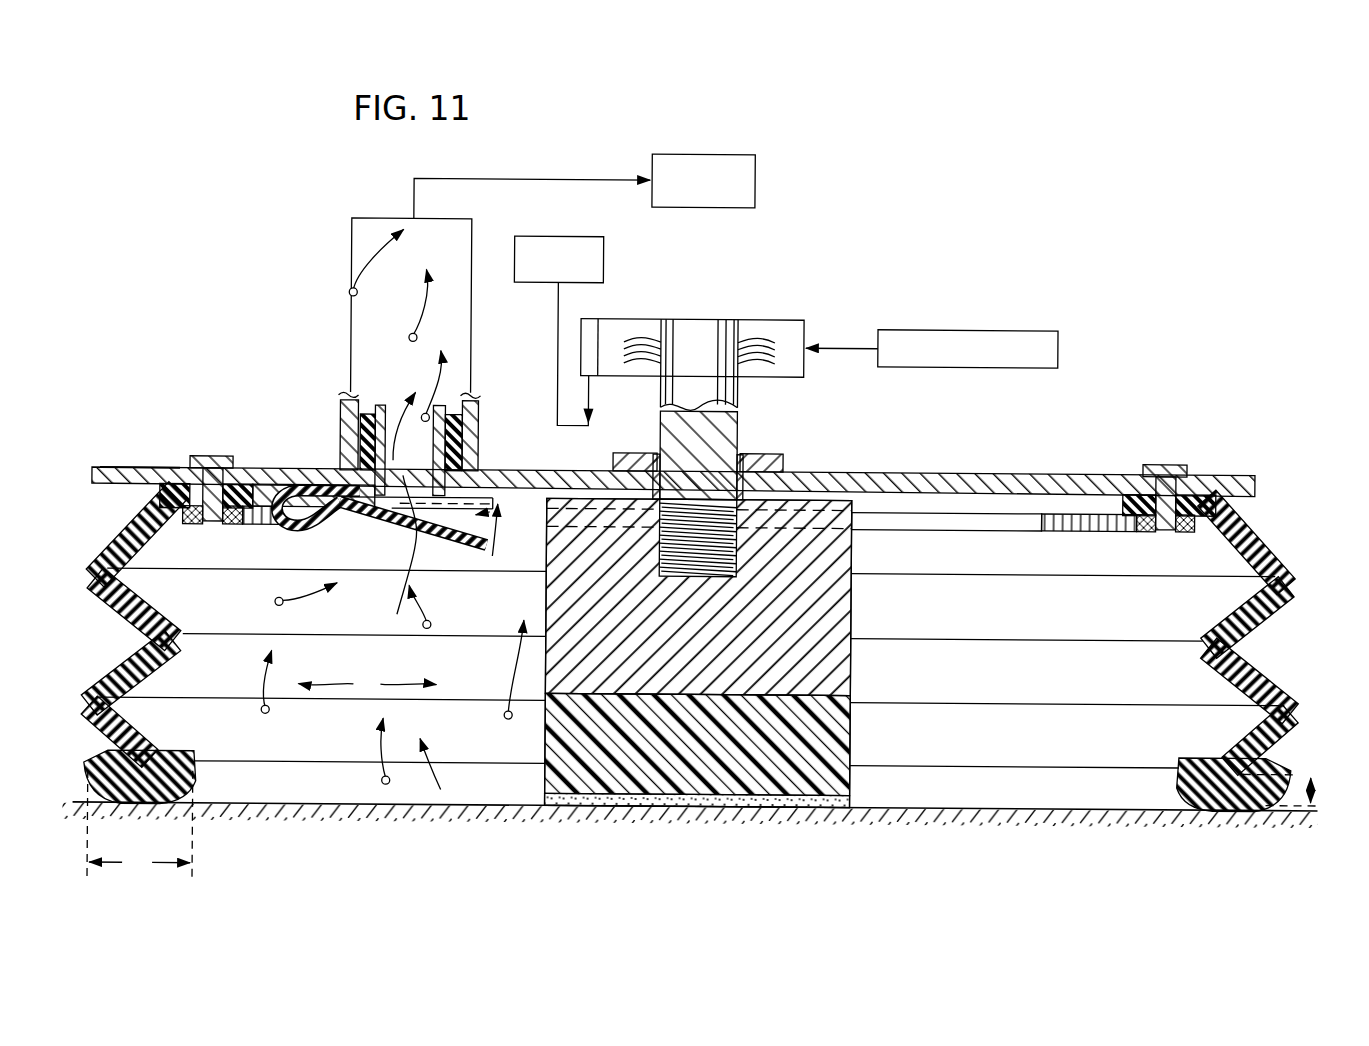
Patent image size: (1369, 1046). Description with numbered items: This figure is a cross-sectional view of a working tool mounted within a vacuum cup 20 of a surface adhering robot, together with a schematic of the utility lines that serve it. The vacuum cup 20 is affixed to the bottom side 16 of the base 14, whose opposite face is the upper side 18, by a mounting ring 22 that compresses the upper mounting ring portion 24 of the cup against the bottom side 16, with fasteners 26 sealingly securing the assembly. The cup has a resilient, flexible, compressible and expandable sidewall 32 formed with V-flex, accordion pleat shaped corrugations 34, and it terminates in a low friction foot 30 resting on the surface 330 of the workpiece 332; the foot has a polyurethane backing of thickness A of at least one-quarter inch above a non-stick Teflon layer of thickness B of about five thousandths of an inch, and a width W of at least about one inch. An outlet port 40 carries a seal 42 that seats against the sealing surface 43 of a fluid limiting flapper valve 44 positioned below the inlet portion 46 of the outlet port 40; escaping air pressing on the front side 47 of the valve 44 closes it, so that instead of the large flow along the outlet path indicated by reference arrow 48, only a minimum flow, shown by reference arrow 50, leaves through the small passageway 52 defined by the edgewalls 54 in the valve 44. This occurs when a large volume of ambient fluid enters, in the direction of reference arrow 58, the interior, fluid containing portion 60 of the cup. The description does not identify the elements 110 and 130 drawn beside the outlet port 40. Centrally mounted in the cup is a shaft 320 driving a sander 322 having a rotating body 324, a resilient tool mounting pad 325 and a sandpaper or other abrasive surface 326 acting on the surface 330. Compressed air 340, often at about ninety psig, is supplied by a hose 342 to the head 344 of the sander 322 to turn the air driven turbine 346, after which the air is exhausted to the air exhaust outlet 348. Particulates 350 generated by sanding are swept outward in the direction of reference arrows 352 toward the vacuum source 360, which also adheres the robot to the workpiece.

The base 14 is at (652, 467).
The bottom side 16 is at (677, 475).
The upper side 18 is at (125, 467).
The vacuum cup 20 is at (694, 667).
The mounting ring 22 is at (186, 523).
The upper mounting ring portion 24 is at (1132, 480).
The fasteners 26 is at (200, 456).
The low friction foot 30 is at (148, 803).
The sidewall 32 is at (120, 658).
The corrugations 34 is at (88, 569).
The outlet port 40 is at (434, 430).
The seal 42 is at (478, 476).
The sealing surface 43 is at (474, 514).
The fluid limiting flapper valve 44 is at (453, 512).
The inlet portion 46 is at (480, 432).
The front side 47 is at (495, 515).
The outlet path 48 is at (507, 553).
The minimum flow path 50 is at (395, 398).
The small passageway 52 is at (410, 518).
The edgewalls 54 is at (420, 520).
The ambient inflow direction 58 is at (438, 757).
The interior fluid containing portion 60 is at (367, 684).
The sleeve 110 is at (341, 420).
The collar 130 is at (360, 446).
The shaft 320 is at (674, 572).
The sander 322 is at (698, 696).
The rotating body 324 is at (767, 688).
The resilient tool mounting pad 325 is at (704, 768).
The abrasive surface 326 is at (800, 860).
The surface 330 is at (348, 803).
The workpiece 332 is at (400, 815).
The compressed air 340 is at (966, 324).
The hose 342 is at (846, 345).
The head 344 is at (760, 316).
The air driven turbine 346 is at (757, 360).
The air exhaust outlet 348 is at (602, 268).
The particulates 350 is at (408, 334).
The particulate flow direction 352 is at (365, 258).
The vacuum source 360 is at (753, 176).
The polyurethane backing thickness A is at (1316, 766).
The Teflon portion thickness B is at (1316, 797).
The foot width W is at (140, 824).